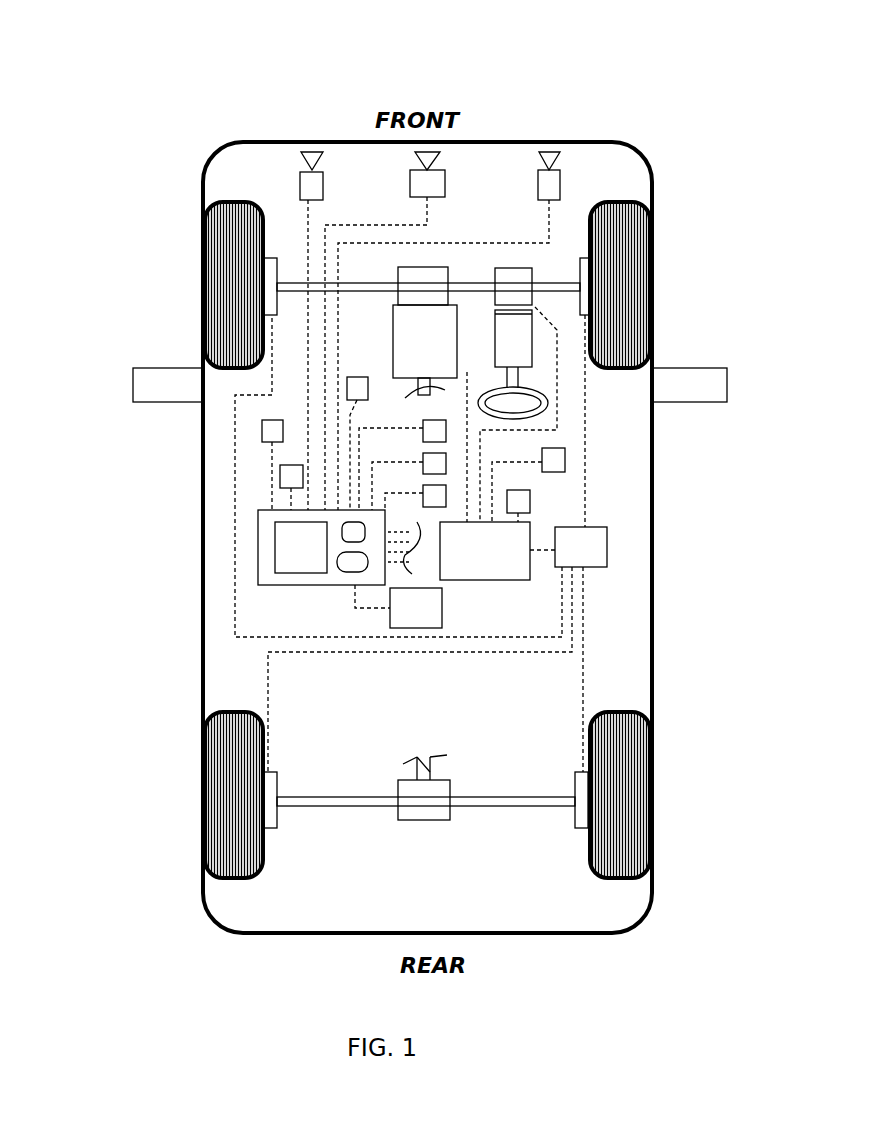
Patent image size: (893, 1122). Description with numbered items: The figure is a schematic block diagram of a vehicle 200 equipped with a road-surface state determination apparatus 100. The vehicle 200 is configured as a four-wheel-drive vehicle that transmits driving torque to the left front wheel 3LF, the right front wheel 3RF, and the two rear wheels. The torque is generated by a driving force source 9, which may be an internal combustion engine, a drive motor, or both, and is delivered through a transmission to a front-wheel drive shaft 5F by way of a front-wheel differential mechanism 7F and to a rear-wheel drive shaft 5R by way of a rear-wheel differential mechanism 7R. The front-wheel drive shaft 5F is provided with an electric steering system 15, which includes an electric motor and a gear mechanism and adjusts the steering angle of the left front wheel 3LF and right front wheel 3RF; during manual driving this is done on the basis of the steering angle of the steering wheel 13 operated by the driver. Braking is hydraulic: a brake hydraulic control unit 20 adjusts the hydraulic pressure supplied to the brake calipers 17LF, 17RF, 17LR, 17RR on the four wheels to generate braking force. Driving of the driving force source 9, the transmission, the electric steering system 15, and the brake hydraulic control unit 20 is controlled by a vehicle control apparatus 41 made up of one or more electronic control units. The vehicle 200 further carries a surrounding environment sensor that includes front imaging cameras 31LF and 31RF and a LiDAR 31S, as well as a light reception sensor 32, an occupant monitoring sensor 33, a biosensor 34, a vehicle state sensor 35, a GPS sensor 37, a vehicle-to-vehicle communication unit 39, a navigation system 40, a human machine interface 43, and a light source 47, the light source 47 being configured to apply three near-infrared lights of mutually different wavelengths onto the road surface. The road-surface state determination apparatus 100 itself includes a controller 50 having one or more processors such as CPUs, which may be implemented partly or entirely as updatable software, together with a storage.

The vehicle 200 is at (114, 32).
The left front wheel 3LF is at (210, 223).
The right front wheel 3RF is at (652, 216).
The front-wheel drive shaft 5F is at (350, 283).
The rear-wheel drive shaft 5R is at (330, 806).
The front-wheel differential mechanism 7F is at (430, 267).
The rear-wheel differential mechanism 7R is at (422, 822).
The driving force source 9 is at (402, 348).
The steering wheel 13 is at (492, 390).
The electric steering system 15 is at (525, 276).
The brake caliper 17LF is at (270, 258).
The brake caliper 17RF is at (583, 258).
The brake caliper 17LR is at (270, 828).
The brake caliper 17RR is at (580, 828).
The brake hydraulic control unit 20 is at (607, 533).
The front imaging camera 31LF is at (300, 180).
The light detection and ranging (LiDAR) 31S is at (445, 181).
The front imaging camera 31RF is at (560, 180).
The light reception sensor 32 is at (355, 376).
The occupant monitoring sensor 33 is at (420, 419).
The biosensor 34 is at (423, 458).
The vehicle state sensor 35 is at (423, 490).
The global positioning system (GPS) sensor 37 is at (280, 475).
The vehicle-to-vehicle communication unit 39 is at (562, 450).
The navigation system 40 is at (530, 493).
The vehicle control apparatus 41 is at (530, 530).
The human machine interface (HMI) 43 is at (262, 428).
The light source 47 is at (442, 600).
The controller 50 is at (285, 575).
The road-surface state determination apparatus 100 is at (258, 545).